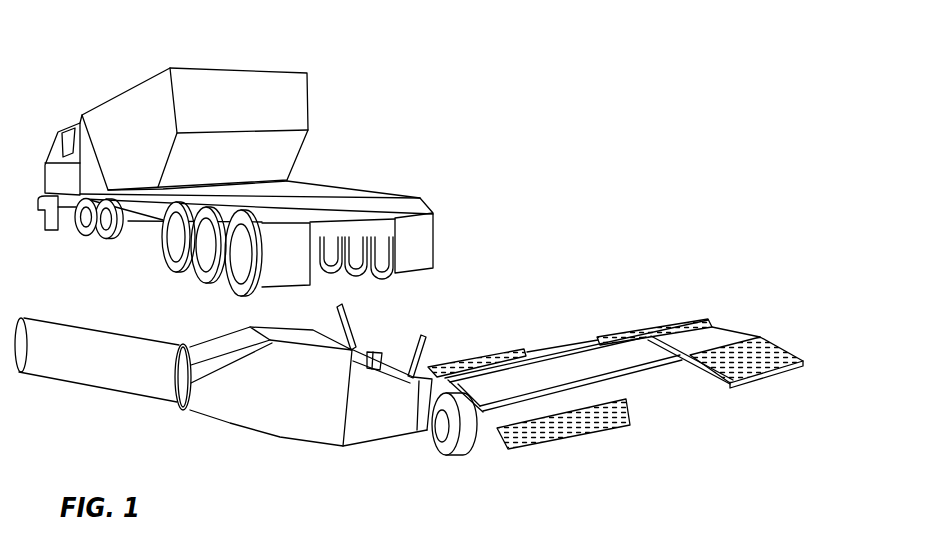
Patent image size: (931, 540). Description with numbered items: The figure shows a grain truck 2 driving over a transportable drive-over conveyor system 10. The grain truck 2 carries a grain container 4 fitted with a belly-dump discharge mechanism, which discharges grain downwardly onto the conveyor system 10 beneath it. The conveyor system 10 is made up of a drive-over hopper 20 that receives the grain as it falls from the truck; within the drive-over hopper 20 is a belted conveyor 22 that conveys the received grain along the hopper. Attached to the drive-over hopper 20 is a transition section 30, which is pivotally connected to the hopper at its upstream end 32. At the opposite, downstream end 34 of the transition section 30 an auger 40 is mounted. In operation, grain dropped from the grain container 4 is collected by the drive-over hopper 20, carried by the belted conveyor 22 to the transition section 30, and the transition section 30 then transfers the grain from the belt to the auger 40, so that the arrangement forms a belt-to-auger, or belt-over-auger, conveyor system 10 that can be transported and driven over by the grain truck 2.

The grain truck 2 is at (113, 73).
The grain container 4 is at (285, 102).
The transportable drive-over conveyor system 10 is at (762, 290).
The drive-over hopper 20 is at (643, 382).
The belted conveyor 22 is at (503, 380).
The transition section 30 is at (283, 423).
The upstream end 32 is at (410, 338).
The downstream end 34 is at (197, 393).
The auger 40 is at (93, 377).